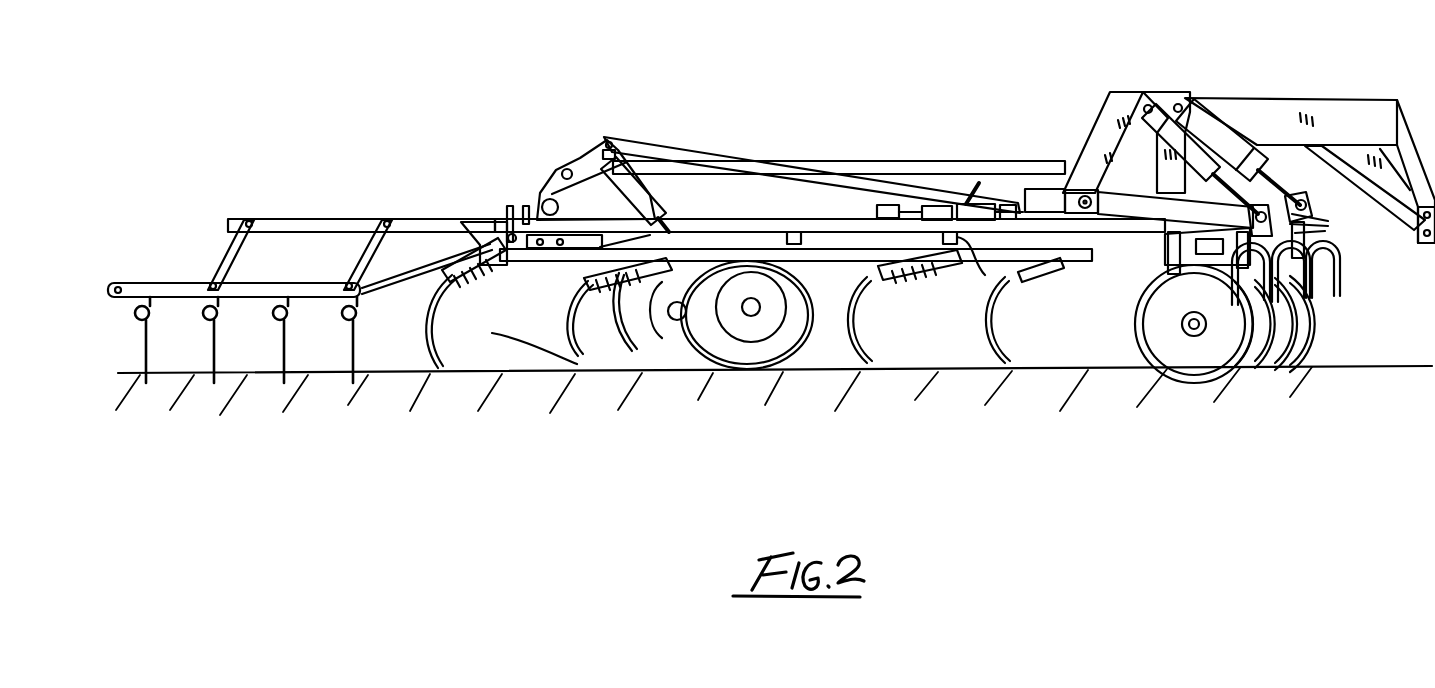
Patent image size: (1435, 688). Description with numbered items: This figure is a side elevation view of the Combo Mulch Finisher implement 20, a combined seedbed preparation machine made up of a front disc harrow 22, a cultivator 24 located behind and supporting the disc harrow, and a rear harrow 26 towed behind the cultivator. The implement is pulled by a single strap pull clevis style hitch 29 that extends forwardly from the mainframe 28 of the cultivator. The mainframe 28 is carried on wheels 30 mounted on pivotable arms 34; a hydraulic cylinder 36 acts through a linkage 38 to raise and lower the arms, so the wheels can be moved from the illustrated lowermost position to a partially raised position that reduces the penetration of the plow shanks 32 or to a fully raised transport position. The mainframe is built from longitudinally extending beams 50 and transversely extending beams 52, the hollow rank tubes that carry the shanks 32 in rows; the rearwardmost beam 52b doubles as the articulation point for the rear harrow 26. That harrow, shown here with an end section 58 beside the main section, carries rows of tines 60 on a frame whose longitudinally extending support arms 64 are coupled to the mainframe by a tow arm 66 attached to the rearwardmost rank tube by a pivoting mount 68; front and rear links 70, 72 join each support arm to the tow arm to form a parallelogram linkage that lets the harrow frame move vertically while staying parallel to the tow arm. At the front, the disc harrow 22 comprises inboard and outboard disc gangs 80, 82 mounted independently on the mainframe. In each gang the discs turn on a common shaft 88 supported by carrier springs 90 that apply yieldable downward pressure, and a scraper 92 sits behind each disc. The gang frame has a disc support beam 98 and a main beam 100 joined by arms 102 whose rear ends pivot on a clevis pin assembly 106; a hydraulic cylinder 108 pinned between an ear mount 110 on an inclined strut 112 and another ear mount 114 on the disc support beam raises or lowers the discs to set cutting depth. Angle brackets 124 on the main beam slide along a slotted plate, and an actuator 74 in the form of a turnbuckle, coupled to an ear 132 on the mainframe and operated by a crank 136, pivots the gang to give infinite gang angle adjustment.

The implement 20 is at (884, 97).
The front disc harrow 22 is at (1256, 124).
The cultivator 24 is at (747, 155).
The rear harrow 26 is at (328, 210).
The mainframe 28 is at (853, 202).
The hitch 29 is at (1382, 101).
The wheels 30 is at (745, 358).
The plow shanks 32 is at (878, 364).
The arms 34 is at (703, 240).
The hydraulic cylinder 36 is at (656, 184).
The linkage 38 is at (808, 162).
The longitudinally extending beams 50 is at (846, 259).
The transversely extending beams 52 is at (597, 273).
The rearwardmost beam 52b is at (514, 204).
The end section 58 is at (134, 281).
The tines 60 is at (352, 344).
The support arms 64 is at (205, 286).
The tow arm 66 is at (411, 219).
The pivoting mount 68 is at (466, 222).
The front link 70 is at (362, 258).
The rear link 72 is at (238, 253).
The actuator 74 is at (935, 207).
The inboard disc gang 80 is at (1334, 318).
The outboard disc gang 82 is at (1188, 398).
The shaft 88 is at (1183, 334).
The carrier springs 90 is at (1322, 271).
The scraper 92 is at (1167, 258).
The disc support beam 98 is at (1182, 242).
The main beam 100 is at (1050, 193).
The arms 102 is at (1112, 202).
The clevis pin assembly 106 is at (1080, 198).
The hydraulic cylinder 108 is at (1210, 115).
The ear mount 110 is at (1148, 100).
The strut 112 is at (1109, 92).
The ear mount 114 is at (1300, 222).
The angle brackets 124 is at (1025, 205).
The ear 132 is at (900, 207).
The crank 136 is at (962, 206).